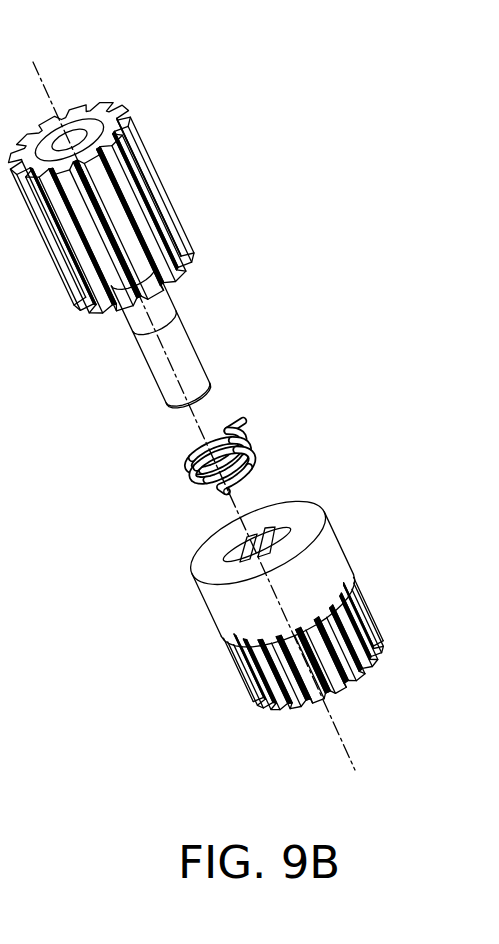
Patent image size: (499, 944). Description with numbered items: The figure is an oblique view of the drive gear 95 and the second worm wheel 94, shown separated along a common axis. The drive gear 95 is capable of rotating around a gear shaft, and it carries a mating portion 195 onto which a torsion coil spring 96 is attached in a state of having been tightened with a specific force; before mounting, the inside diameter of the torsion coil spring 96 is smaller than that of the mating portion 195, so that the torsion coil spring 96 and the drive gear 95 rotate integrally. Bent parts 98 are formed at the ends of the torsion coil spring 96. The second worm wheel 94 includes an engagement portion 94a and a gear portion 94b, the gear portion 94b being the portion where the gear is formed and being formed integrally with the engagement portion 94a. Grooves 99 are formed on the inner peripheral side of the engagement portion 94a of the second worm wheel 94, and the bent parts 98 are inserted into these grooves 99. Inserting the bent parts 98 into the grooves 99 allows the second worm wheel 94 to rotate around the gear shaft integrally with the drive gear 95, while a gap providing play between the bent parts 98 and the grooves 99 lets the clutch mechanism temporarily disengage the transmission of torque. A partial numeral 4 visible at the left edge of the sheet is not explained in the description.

The drive gear 95 is at (147, 235).
The mating portion 195 is at (158, 295).
The bent parts 98 is at (239, 424).
The torsion coil spring 96 is at (243, 421).
The grooves 99 is at (268, 520).
The second worm wheel 94 is at (326, 552).
The engagement portion 94a is at (325, 560).
The gear portion 94b is at (368, 618).
The cropped numeral 4 is at (6, 376).